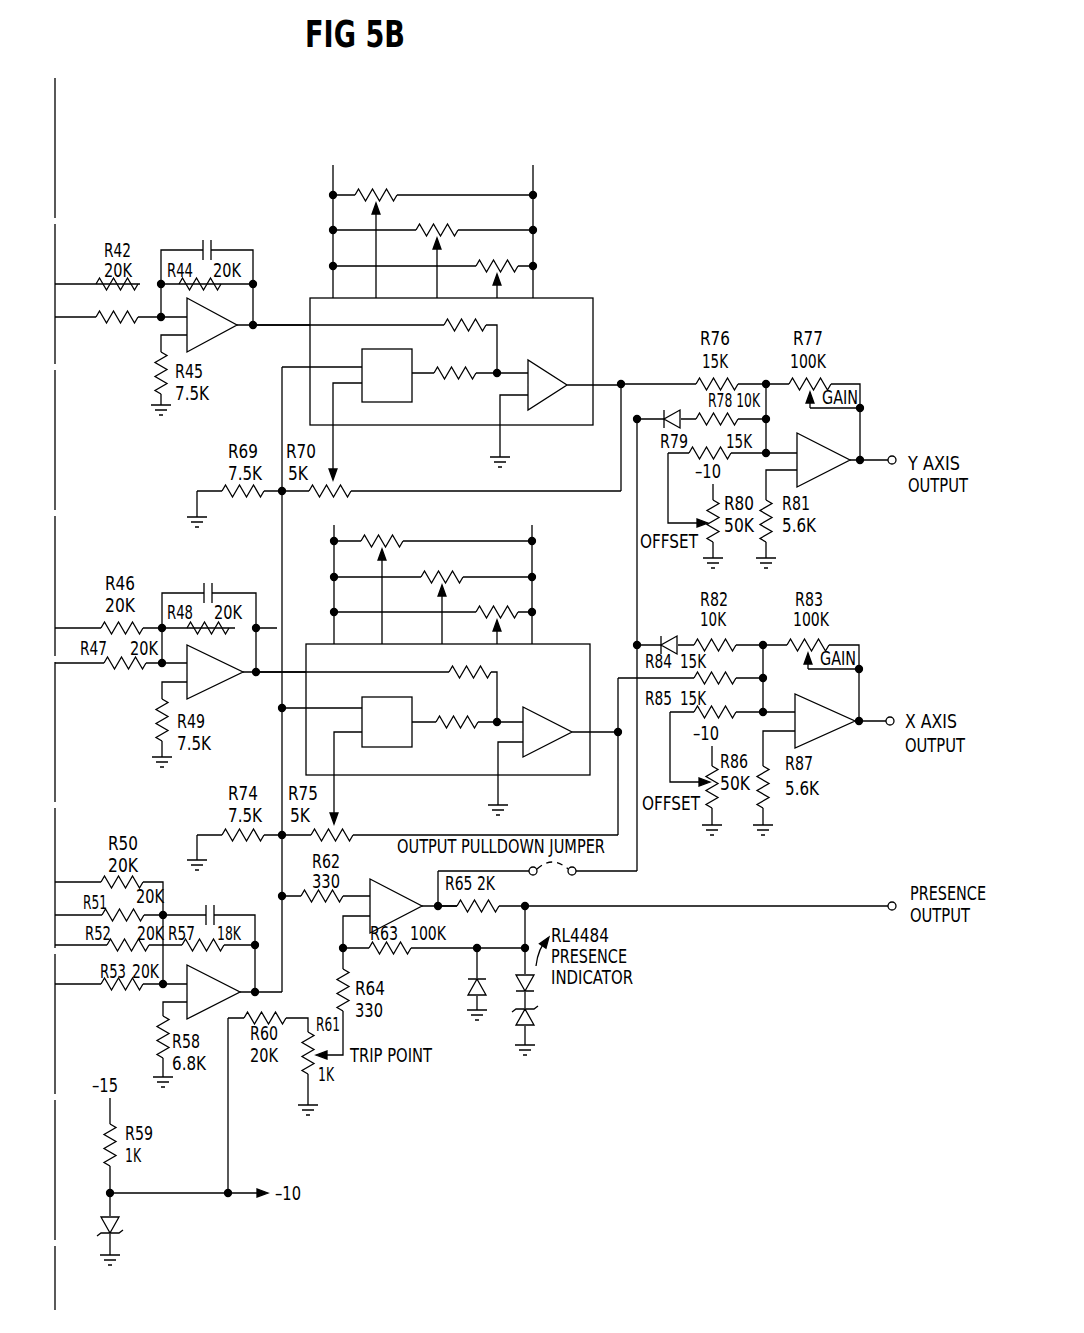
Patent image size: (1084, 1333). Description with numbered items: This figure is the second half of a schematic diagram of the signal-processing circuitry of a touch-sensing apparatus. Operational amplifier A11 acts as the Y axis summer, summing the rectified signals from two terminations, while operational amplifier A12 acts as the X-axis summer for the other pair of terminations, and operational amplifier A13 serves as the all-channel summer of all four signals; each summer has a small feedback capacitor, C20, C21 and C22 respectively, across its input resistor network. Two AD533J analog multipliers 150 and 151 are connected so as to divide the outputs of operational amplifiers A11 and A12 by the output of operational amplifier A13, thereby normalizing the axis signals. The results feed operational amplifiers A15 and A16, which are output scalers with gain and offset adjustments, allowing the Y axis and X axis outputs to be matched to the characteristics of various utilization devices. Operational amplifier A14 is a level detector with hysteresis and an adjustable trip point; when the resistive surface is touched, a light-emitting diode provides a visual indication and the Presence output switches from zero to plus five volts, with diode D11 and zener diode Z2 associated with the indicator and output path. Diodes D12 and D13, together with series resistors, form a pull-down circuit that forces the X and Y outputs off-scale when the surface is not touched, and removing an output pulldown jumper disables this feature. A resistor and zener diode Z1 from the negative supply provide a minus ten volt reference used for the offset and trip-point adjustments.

The analog multiplier 150 is at (430, 415).
The analog multiplier 151 is at (568, 644).
The operational amplifier A11 is at (212, 325).
The operational amplifier A12 is at (215, 672).
The operational amplifier A13 is at (213, 992).
The operational amplifier A14 is at (396, 906).
The operational amplifier A15 is at (823, 460).
The operational amplifier A16 is at (825, 721).
The capacitor C20 is at (209, 218).
The capacitor C21 is at (209, 565).
The capacitor C22 is at (221, 891).
The diode D11 is at (450, 972).
The diode D12 is at (657, 407).
The diode D13 is at (665, 620).
The zener diode Z1 is at (135, 1235).
The zener diode Z2 is at (557, 1015).